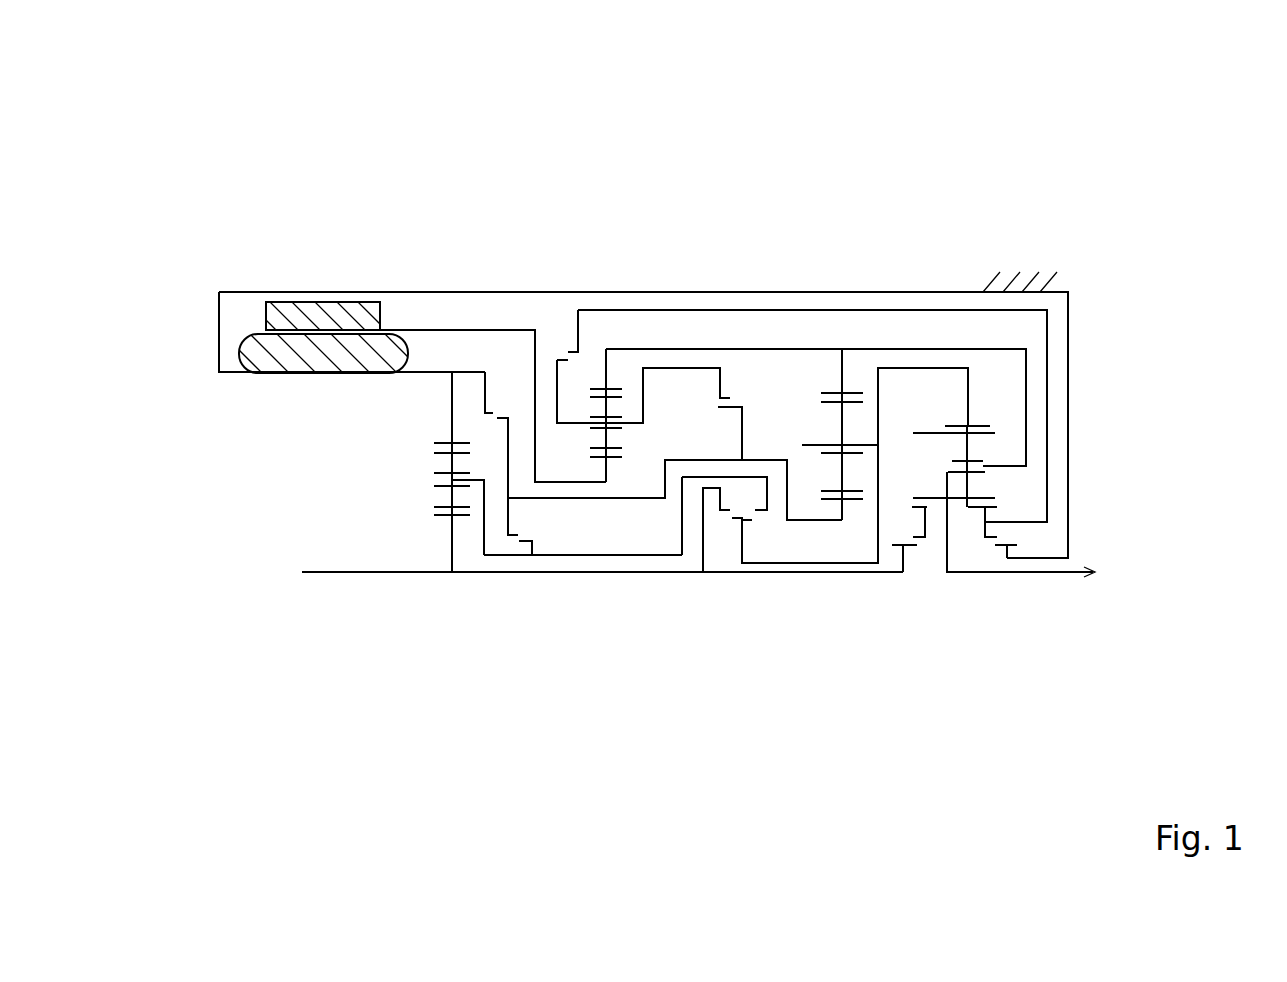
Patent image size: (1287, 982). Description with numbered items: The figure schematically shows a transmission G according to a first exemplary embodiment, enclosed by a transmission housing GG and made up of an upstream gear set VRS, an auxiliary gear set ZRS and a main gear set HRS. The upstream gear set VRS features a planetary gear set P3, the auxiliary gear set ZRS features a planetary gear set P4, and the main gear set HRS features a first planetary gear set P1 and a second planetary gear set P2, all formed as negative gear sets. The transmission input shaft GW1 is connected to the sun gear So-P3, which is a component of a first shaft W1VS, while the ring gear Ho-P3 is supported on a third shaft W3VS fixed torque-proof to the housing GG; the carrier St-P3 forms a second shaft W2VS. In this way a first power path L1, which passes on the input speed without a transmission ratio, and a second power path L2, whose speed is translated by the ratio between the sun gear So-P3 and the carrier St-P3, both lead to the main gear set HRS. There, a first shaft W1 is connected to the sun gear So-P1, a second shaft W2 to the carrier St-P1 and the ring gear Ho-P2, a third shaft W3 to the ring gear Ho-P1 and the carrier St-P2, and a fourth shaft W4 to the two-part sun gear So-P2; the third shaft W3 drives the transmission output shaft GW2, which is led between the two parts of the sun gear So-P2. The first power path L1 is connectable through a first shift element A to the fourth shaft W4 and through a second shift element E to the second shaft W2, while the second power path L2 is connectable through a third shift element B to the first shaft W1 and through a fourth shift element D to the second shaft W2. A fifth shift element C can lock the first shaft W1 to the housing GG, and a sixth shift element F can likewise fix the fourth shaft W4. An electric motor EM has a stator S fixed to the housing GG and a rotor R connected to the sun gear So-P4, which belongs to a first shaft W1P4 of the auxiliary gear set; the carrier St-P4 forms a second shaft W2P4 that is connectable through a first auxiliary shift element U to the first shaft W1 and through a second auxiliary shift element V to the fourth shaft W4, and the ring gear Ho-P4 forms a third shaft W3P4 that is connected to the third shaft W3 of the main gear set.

The transmission G is at (308, 105).
The transmission housing GG is at (1068, 308).
The electric motor EM is at (305, 237).
The rotor R is at (320, 302).
The stator S is at (393, 345).
The first shaft of the auxiliary gear set W1P4 is at (455, 330).
The second shaft of the auxiliary gear set W2P4 is at (536, 337).
The third shaft of the auxiliary gear set W3P4 is at (698, 368).
The carrier of the planetary gear set P4 St-P4 is at (583, 417).
The ring gear of the planetary gear set P4 Ho-P4 is at (615, 389).
The sun gear of the planetary gear set P4 So-P4 is at (615, 460).
The carrier of the first planetary gear set St-P1 is at (805, 445).
The ring gear of the first planetary gear set Ho-P1 is at (853, 393).
The sun gear of the first planetary gear set So-P1 is at (837, 503).
The second shaft of the main gear set W2 is at (883, 423).
The third shaft of the main gear set W3 is at (1030, 360).
The fourth shaft of the main gear set W4 is at (1047, 460).
The first shaft of the main gear set W1 is at (797, 520).
The ring gear of the second planetary gear set Ho-P2 is at (980, 422).
The carrier of the second planetary gear set St-P2 is at (993, 468).
The sun gear of the second planetary gear set So-P2 is at (973, 510).
The third shaft of the upstream gear set W3VS is at (450, 390).
The ring gear of the planetary gear set P3 Ho-P3 is at (447, 444).
The carrier of the planetary gear set P3 St-P3 is at (447, 477).
The sun gear of the planetary gear set P3 So-P3 is at (447, 512).
The transmission input shaft GW1 is at (357, 573).
The transmission output shaft GW2 is at (1058, 575).
The first shaft of the upstream gear set W1VS is at (453, 542).
The second shaft of the upstream gear set W2VS is at (497, 555).
The first power path L1 is at (682, 556).
The second power path L2 is at (523, 555).
The first planetary gear set P1 is at (893, 430).
The second planetary gear set P2 is at (1082, 552).
The planetary gear set of the upstream gear set P3 is at (289, 553).
The planetary gear set of the auxiliary gear set P4 is at (655, 430).
The upstream gear set VRS is at (290, 571).
The auxiliary gear set ZRS is at (655, 430).
The main gear set HRS is at (1017, 430).
The first shift element A is at (909, 539).
The third shift element B is at (520, 526).
The fifth shift element C is at (496, 401).
The fourth shift element D is at (755, 522).
The second shift element E is at (722, 530).
The sixth shift element F is at (1008, 532).
The first auxiliary shift element U is at (728, 407).
The second auxiliary shift element V is at (564, 347).